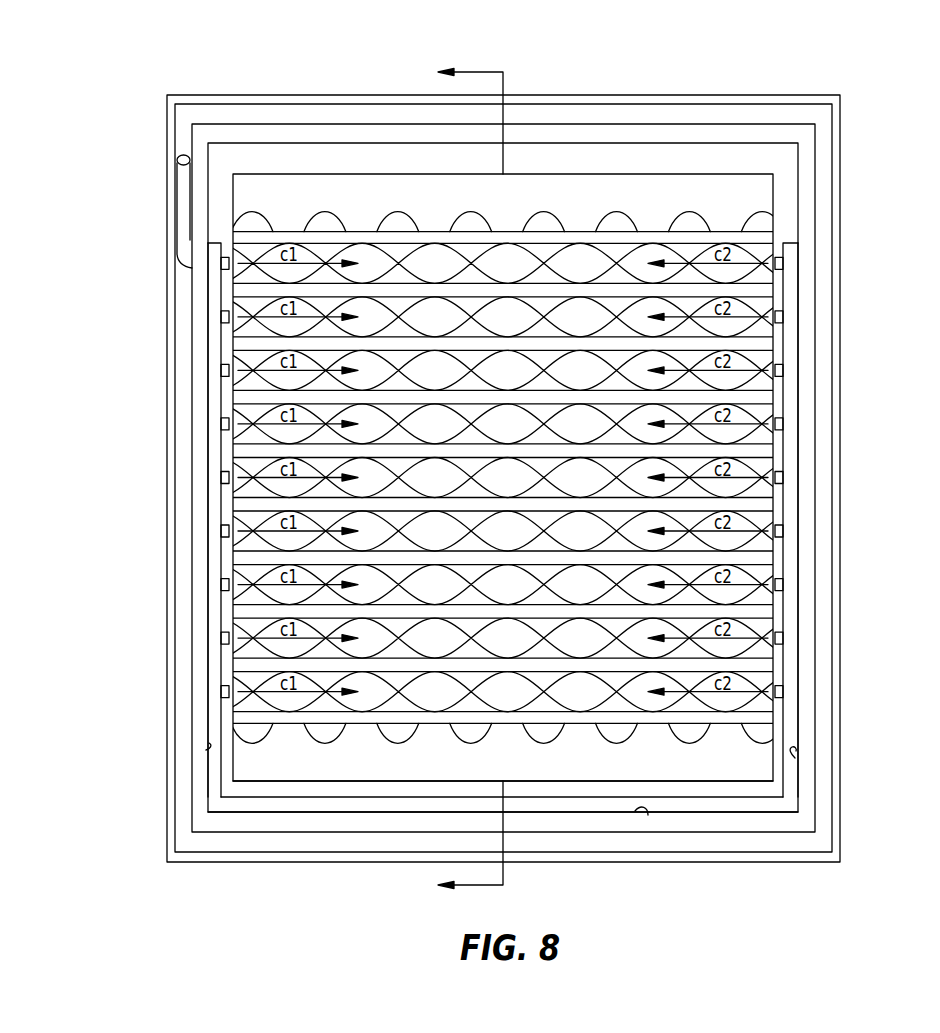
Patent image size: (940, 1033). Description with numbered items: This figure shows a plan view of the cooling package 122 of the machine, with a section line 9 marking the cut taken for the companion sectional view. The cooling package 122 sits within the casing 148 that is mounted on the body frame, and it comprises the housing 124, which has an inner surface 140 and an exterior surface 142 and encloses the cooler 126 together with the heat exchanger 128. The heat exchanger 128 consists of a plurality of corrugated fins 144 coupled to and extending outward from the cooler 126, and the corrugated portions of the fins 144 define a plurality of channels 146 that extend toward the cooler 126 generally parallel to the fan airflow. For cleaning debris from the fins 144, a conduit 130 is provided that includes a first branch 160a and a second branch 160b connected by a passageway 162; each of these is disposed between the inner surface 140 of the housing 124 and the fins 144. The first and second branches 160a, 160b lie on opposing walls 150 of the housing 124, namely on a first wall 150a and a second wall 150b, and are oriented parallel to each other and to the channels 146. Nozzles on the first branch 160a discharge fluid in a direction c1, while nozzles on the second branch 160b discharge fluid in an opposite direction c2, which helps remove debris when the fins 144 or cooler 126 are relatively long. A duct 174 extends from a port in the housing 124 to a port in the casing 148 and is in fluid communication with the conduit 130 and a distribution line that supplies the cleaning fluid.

The section line 9- 9 is at (462, 479).
The cooling package 122 is at (705, 115).
The housing 124 is at (198, 665).
The cooler 126 is at (537, 195).
The heat exchanger 128 is at (773, 215).
The conduit 130 is at (218, 802).
The inner surface 140 is at (206, 750).
The exterior surface 142 is at (798, 802).
The fins 144 is at (253, 293).
The channels 146 is at (400, 705).
The casing 148 is at (620, 98).
The walls 150 is at (507, 477).
The first wall 150a is at (200, 512).
The second wall 150b is at (803, 623).
The first branch 160a is at (213, 353).
The second branch 160b is at (786, 552).
The passageway 162 is at (412, 803).
The duct 174 is at (185, 207).
The direction C1 c1 is at (298, 469).
The direction C2 c2 is at (708, 469).